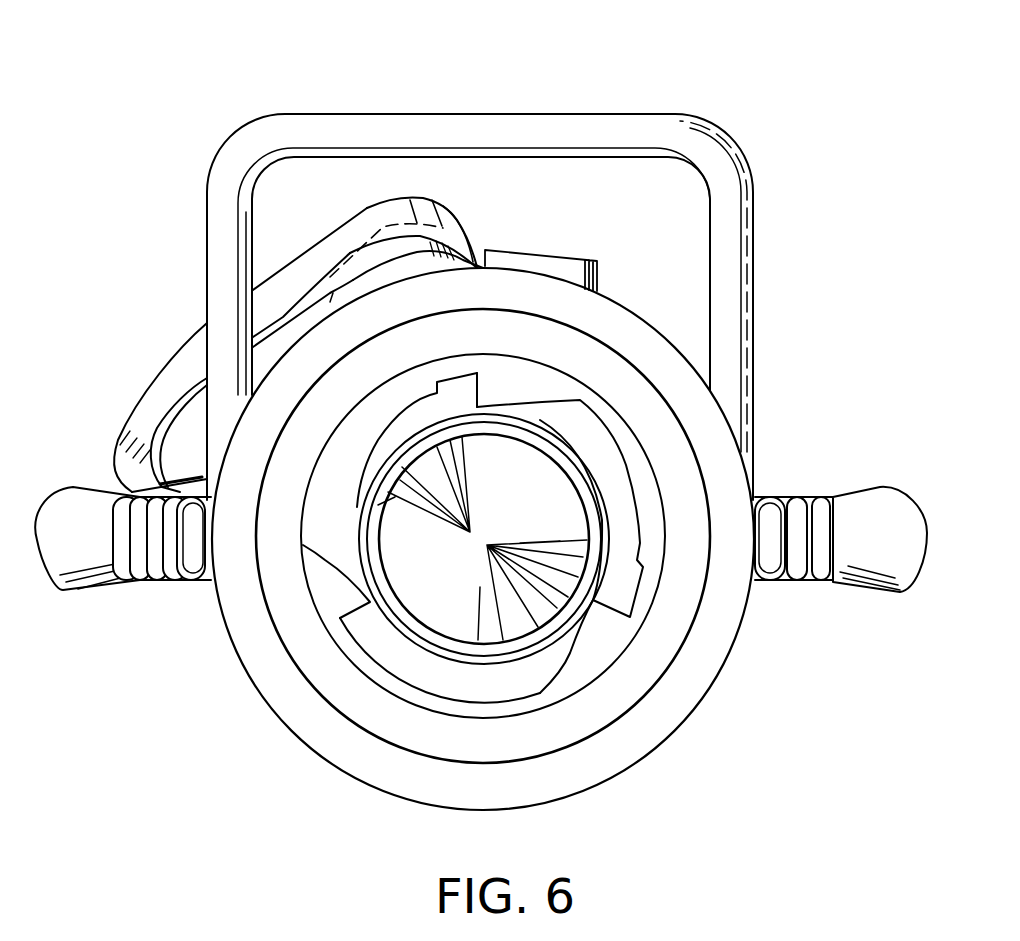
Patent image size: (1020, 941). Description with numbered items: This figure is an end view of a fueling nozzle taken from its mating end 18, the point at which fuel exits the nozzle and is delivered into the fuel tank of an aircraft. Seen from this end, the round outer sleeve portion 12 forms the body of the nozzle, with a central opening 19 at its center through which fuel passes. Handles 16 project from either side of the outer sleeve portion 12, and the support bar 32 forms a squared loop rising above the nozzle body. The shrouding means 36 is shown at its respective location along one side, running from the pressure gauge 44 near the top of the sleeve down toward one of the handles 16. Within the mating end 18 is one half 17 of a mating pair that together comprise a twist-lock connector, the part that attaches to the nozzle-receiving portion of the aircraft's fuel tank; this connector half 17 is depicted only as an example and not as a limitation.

The outer sleeve portion 12 is at (642, 765).
The handles 16 is at (116, 590).
The one half of a mating pair 17 is at (603, 447).
The mating end 18 is at (628, 685).
The central opening 19 is at (411, 574).
The support bar 32 is at (580, 128).
The shrouding means 36 is at (188, 347).
The pressure gauge 44 is at (385, 227).